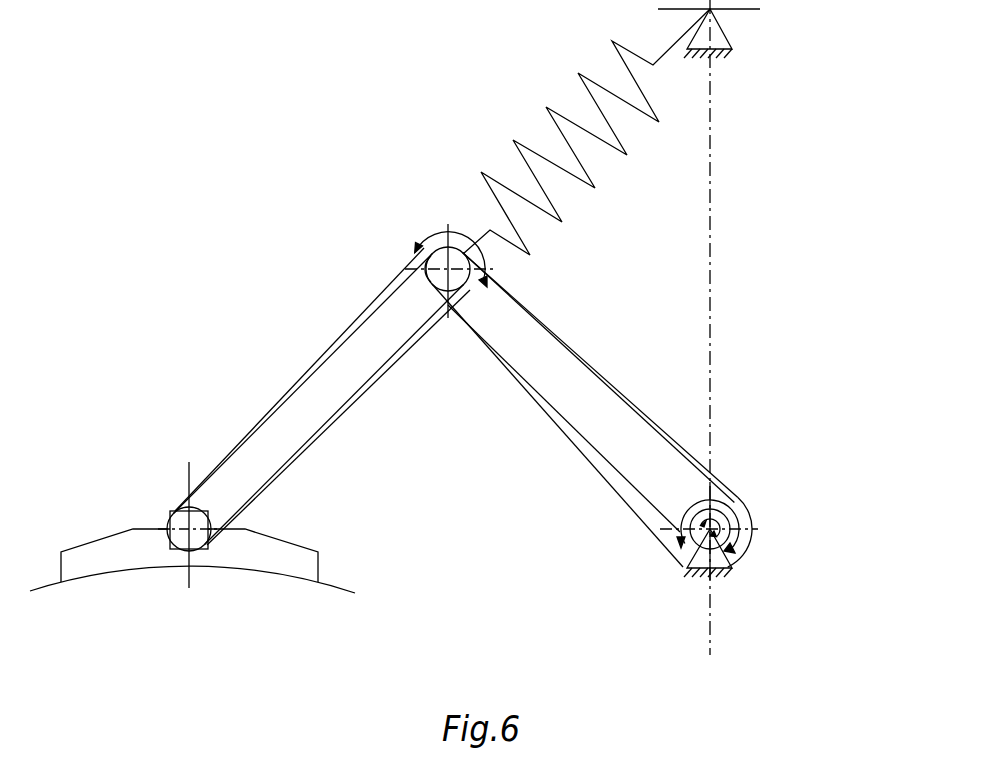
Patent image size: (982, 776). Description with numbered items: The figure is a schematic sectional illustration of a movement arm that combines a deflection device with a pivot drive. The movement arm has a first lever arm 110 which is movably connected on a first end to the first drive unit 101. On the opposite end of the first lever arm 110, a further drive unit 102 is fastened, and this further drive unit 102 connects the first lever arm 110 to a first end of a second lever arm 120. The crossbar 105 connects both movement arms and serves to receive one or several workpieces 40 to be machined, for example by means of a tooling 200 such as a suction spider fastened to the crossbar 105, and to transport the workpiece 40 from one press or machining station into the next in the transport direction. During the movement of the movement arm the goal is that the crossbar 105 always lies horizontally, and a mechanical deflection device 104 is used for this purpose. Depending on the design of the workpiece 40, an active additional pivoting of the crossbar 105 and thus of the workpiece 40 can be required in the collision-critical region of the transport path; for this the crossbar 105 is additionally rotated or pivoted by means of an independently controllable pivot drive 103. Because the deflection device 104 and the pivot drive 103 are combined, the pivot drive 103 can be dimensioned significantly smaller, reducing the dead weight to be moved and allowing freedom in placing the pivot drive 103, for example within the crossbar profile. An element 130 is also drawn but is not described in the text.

The spring 130 is at (546, 107).
The further drive unit 102 is at (437, 232).
The second lever arm 120 is at (339, 352).
The first lever arm 110 is at (668, 447).
The mechanical deflection device 104 is at (454, 396).
The pivot drive 103 is at (716, 507).
The first drive unit 101 is at (706, 511).
The crossbar 105 is at (170, 512).
The tooling 200 is at (258, 555).
The workpiece 40 is at (337, 592).